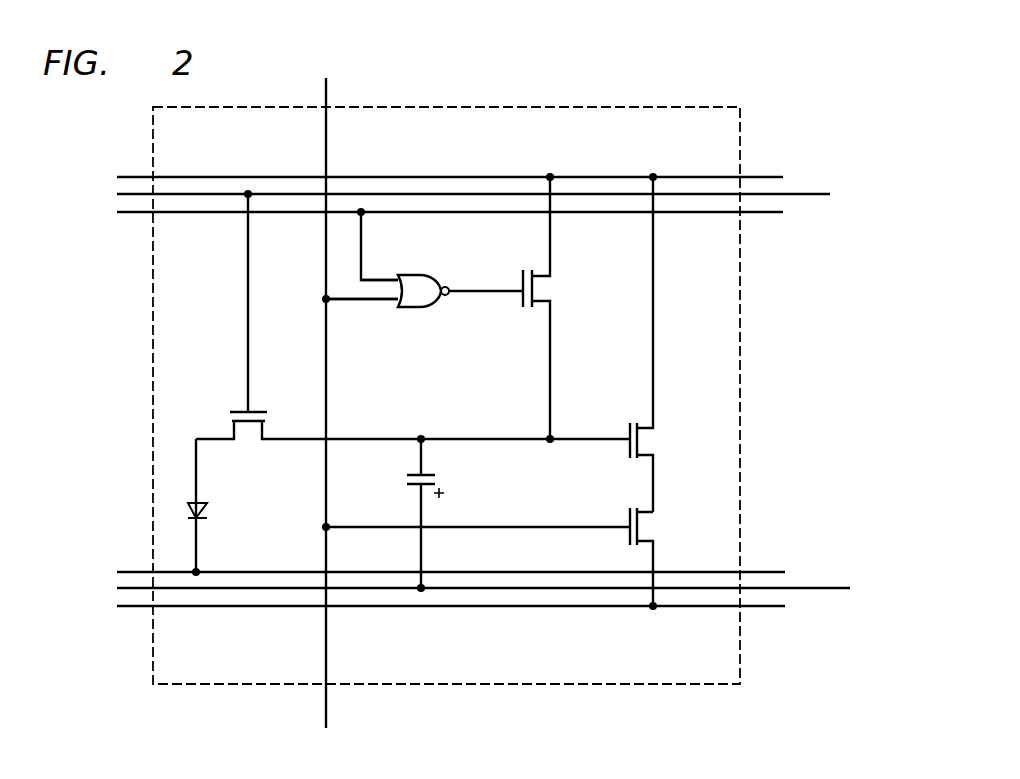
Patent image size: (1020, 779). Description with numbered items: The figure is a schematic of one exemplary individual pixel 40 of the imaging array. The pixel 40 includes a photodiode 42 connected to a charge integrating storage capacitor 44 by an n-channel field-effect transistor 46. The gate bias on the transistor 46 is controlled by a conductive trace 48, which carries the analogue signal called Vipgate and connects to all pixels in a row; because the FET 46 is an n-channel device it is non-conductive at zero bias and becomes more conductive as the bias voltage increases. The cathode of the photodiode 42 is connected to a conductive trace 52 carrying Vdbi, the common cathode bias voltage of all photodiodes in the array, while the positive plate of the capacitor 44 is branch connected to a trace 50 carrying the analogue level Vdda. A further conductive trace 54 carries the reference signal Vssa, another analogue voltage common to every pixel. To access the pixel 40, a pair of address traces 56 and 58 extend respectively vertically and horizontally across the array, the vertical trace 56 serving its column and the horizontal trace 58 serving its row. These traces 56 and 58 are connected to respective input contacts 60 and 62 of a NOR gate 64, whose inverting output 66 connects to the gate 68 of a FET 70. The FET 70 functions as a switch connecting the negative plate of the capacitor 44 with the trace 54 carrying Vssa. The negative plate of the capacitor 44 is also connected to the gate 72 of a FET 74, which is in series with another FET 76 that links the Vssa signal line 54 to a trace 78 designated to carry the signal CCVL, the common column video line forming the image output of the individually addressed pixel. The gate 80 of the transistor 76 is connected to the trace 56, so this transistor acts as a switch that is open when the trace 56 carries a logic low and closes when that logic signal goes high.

The pixel 40 is at (515, 107).
The photodiode 42 is at (213, 508).
The charge integrating storage capacitor 44 is at (448, 475).
The n-channel field-effect transistor 46 is at (257, 403).
The conductive trace 48 is at (797, 197).
The trace 50 is at (833, 588).
The conductive trace 52 is at (765, 571).
The conductive trace 54 is at (767, 177).
The address trace 56 is at (327, 710).
The address trace 58 is at (757, 213).
The input contact 60 is at (387, 302).
The input contact 62 is at (378, 280).
The nor gate 64 is at (430, 272).
The inverting output 66 is at (445, 296).
The gate 68 is at (517, 298).
The FET 70 is at (550, 289).
The gate 72 is at (622, 428).
The FET 74 is at (653, 440).
The FET 76 is at (653, 528).
The trace 78 is at (757, 608).
The gate 80 is at (622, 518).